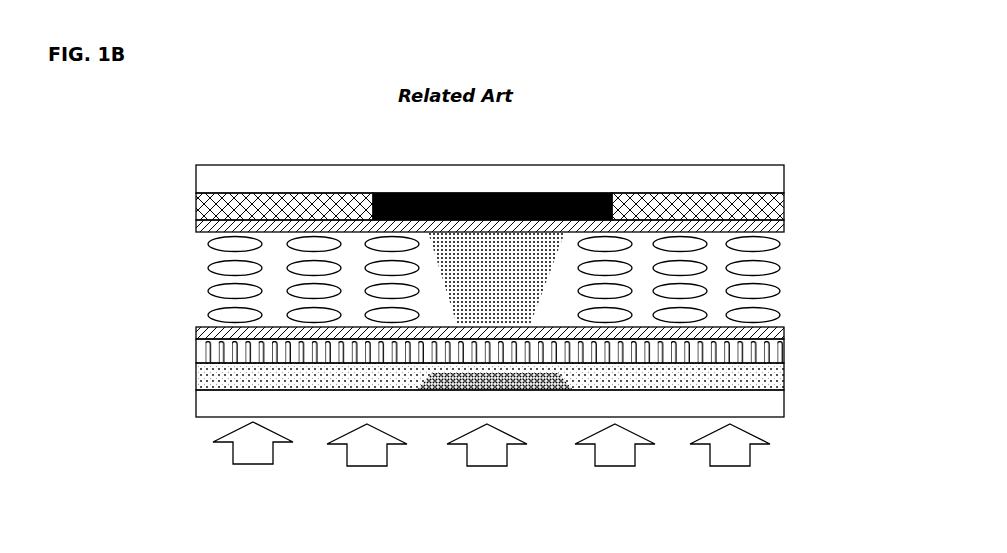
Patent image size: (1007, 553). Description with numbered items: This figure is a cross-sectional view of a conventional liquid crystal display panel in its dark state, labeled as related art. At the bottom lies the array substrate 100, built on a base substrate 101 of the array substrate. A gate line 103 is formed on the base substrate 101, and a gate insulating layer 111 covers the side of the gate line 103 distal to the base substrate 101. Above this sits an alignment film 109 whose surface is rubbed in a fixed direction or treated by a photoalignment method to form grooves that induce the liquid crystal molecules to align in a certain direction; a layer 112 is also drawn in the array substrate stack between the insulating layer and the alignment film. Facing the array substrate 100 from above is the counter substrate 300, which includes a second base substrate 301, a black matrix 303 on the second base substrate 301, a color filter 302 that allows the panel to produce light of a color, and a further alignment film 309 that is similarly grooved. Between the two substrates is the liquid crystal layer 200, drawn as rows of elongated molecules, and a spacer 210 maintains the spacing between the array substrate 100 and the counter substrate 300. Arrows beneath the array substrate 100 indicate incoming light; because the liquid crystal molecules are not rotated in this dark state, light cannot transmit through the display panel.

The array substrate 100 is at (484, 402).
The base substrate 101 is at (459, 421).
The gate line 103 is at (518, 439).
The alignment film 109 is at (528, 321).
The gate insulating layer 111 is at (490, 433).
The pixel electrode 112 is at (490, 422).
The liquid crystal layer 200 is at (531, 280).
The spacer 210 is at (490, 184).
The counter substrate 300 is at (452, 196).
The second base substrate 301 is at (490, 165).
The color filter 302 is at (316, 178).
The black matrix 303 is at (492, 178).
The alignment film 309 is at (698, 178).